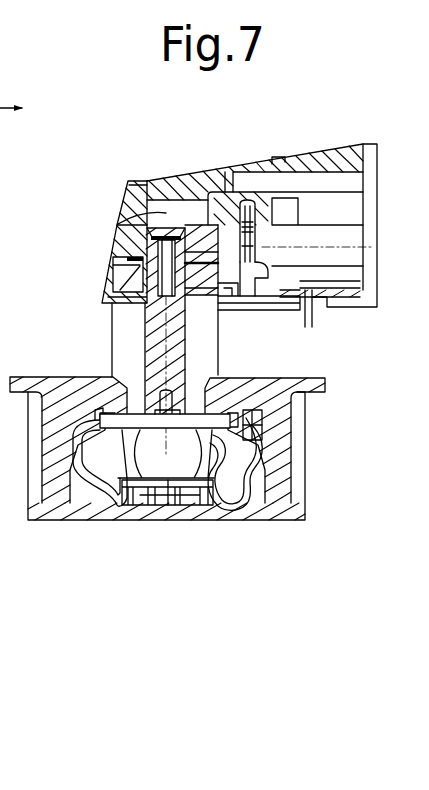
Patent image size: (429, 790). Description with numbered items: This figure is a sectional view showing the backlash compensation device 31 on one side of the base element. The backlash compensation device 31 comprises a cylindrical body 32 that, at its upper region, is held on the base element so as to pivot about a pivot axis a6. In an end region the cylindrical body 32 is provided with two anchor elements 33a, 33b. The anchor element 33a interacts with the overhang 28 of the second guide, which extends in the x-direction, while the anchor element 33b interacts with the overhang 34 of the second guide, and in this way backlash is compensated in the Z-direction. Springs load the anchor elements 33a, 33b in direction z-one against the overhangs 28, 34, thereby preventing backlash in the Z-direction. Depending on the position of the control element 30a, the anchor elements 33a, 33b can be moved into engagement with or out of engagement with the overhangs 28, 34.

The pivot axis a6 is at (165, 216).
The overhang 28 is at (116, 401).
The control element 30a is at (283, 300).
The backlash compensation device 31 is at (128, 332).
The cylindrical body 32 is at (137, 273).
The anchor element 33a is at (130, 505).
The anchor element 33b is at (208, 497).
The overhang 34 is at (220, 390).